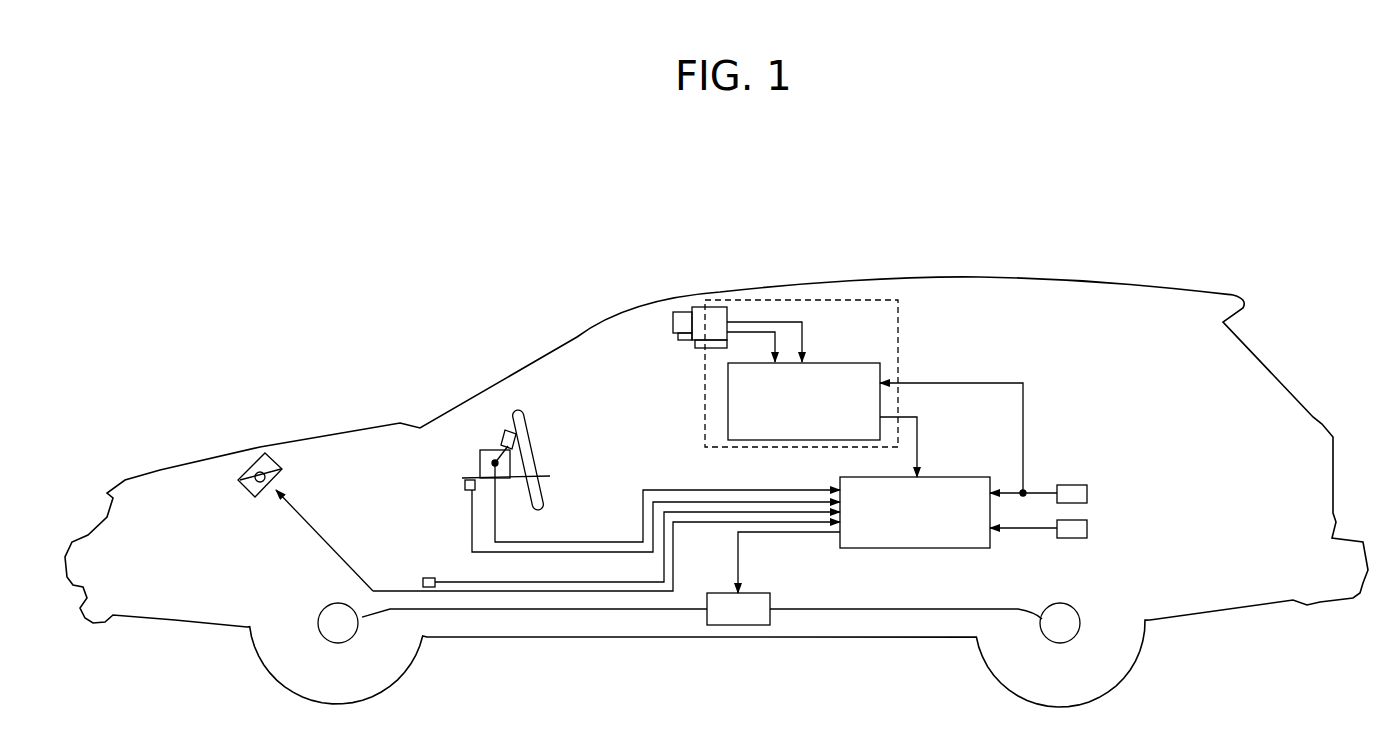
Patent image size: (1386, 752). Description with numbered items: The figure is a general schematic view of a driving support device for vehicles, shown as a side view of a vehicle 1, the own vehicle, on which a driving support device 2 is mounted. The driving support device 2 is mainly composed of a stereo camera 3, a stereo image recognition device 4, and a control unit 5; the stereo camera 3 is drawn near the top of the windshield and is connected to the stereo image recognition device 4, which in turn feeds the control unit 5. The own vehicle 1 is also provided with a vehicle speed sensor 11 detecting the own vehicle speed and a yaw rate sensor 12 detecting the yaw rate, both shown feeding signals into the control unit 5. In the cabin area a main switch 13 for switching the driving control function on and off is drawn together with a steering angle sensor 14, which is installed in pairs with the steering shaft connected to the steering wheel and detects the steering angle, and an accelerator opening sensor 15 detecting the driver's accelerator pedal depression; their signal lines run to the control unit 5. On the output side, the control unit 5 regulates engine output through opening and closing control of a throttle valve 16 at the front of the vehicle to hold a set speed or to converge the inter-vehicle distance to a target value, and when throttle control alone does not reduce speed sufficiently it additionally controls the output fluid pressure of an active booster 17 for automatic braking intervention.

The vehicle 1 is at (716, 430).
The driving support device 2 is at (1068, 387).
The stereo camera 3 is at (683, 355).
The stereo image recognition device 4 is at (842, 363).
The control unit 5 is at (952, 477).
The vehicle speed sensor 11 is at (1087, 493).
The yaw rate sensor 12 is at (1087, 528).
The main switch 13 is at (507, 482).
The steering angle sensor 14 is at (472, 478).
The accelerator opening sensor 15 is at (426, 578).
The throttle valve 16 is at (242, 487).
The active booster 17 is at (723, 593).